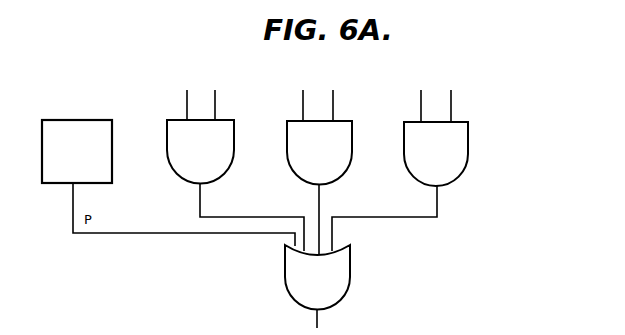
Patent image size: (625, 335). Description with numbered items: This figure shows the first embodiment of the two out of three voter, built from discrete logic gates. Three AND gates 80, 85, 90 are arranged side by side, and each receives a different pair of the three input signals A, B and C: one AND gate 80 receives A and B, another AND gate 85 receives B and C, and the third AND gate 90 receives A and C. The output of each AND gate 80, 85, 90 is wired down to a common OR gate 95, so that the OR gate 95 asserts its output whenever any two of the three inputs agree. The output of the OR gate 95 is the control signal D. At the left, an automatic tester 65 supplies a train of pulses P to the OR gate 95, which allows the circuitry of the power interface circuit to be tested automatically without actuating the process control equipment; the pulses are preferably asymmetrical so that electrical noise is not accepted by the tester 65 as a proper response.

The automatic tester 65 is at (60, 119).
The AND gate 80 is at (234, 142).
The AND gate 85 is at (352, 153).
The AND gate 90 is at (469, 140).
The OR gate 95 is at (350, 267).